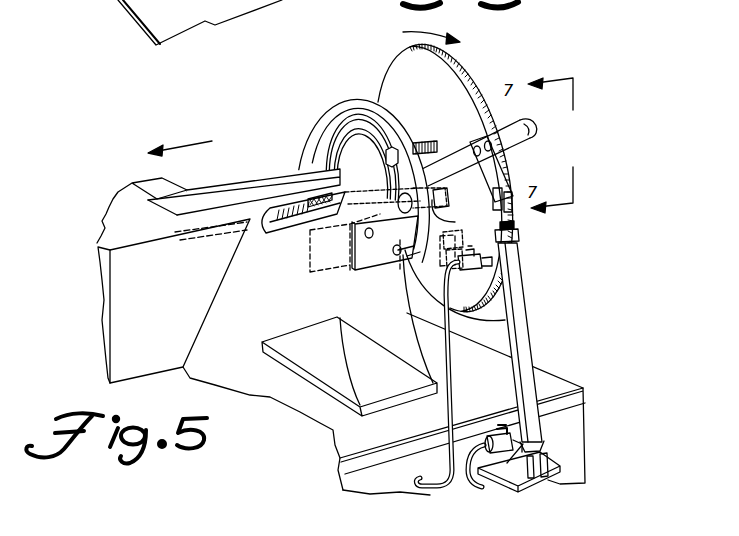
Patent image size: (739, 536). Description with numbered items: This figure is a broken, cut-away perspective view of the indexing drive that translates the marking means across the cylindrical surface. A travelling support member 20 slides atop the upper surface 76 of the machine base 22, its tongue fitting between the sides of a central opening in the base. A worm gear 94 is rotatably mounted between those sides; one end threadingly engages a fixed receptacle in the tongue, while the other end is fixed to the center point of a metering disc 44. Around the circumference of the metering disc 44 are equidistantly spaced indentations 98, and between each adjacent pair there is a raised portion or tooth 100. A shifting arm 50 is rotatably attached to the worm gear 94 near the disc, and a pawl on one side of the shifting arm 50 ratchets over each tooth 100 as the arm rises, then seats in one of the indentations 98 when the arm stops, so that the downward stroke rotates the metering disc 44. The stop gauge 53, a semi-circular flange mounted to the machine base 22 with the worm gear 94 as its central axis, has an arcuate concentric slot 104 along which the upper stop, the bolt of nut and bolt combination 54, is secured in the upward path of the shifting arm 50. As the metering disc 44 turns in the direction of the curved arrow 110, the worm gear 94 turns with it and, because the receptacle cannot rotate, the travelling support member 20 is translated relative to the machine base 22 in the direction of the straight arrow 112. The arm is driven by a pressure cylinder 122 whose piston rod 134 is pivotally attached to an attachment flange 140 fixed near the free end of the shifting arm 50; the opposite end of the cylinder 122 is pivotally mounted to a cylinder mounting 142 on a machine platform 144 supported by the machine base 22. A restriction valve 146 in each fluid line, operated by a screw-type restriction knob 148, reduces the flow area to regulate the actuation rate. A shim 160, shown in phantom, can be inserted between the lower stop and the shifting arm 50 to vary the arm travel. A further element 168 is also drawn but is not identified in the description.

The travelling support member 20 is at (120, 350).
The machine base 22 is at (216, 340).
The metering disc 44 is at (387, 70).
The shifting arm 50 is at (527, 118).
The stop gauge 53 is at (332, 108).
The nut and bolt combination 54 is at (414, 142).
The upper surface 76 is at (200, 197).
The worm gear 94 is at (278, 207).
The indentations 98 is at (478, 81).
The tooth 100 is at (468, 66).
The arcuate concentric slot 104 is at (315, 127).
The curved arrow 110 is at (416, 30).
The straight arrow 112 is at (192, 138).
The pressure cylinder 122 is at (520, 292).
The piston rod 134 is at (512, 228).
The attachment flange 140 is at (513, 175).
The cylinder mounting 142 is at (562, 470).
The machine platform 144 is at (527, 450).
The restriction valve 146 is at (487, 270).
The restriction knob 148 is at (503, 403).
The shim 160 is at (450, 222).
The nozzle 168 is at (456, 229).